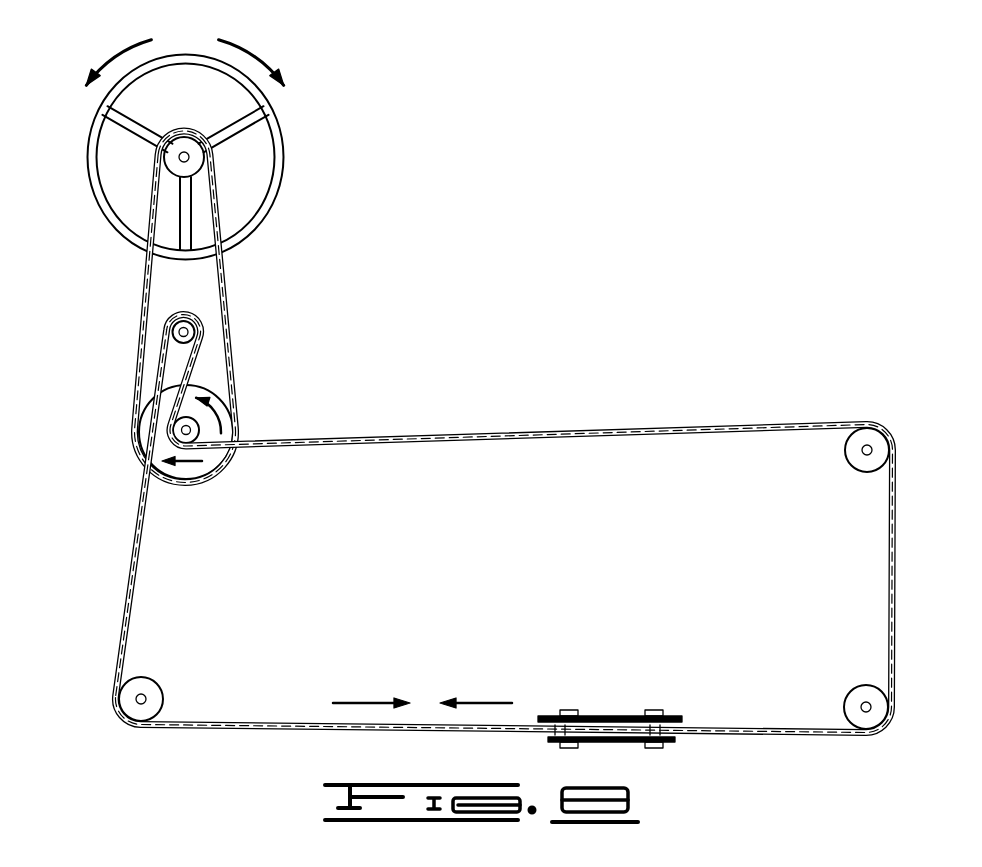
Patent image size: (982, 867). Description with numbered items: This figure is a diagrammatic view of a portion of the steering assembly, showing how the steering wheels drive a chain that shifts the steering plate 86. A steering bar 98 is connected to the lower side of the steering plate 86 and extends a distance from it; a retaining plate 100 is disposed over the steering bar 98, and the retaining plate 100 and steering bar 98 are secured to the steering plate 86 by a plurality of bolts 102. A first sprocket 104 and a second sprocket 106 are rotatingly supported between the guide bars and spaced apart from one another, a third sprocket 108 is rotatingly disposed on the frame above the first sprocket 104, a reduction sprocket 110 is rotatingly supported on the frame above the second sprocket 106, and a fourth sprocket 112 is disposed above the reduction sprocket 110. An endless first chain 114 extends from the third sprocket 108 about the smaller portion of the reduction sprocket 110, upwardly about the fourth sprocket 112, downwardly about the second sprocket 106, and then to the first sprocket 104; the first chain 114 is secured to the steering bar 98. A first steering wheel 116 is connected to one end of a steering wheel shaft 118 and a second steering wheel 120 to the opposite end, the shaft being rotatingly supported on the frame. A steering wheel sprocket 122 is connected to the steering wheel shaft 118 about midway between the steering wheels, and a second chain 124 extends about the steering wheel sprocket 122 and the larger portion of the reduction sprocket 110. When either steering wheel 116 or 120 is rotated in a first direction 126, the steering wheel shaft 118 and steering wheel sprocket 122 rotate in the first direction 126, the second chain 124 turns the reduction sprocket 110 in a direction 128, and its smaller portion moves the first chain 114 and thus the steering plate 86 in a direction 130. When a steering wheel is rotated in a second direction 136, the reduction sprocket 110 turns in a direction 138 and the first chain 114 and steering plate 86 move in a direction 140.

The steering plate 86 is at (672, 718).
The steering bar 98 is at (660, 748).
The retaining plate 100 is at (674, 741).
The bolts 102 is at (569, 710).
The first sprocket 104 is at (858, 694).
The second sprocket 106 is at (137, 683).
The third sprocket 108 is at (862, 462).
The reduction sprocket 110 is at (203, 388).
The fourth sprocket 112 is at (183, 340).
The first chain 114 is at (247, 721).
The first steering wheel 116 is at (240, 157).
The steering wheel shaft 118 is at (192, 160).
The second steering wheel 120 is at (187, 157).
The steering wheel sprocket 122 is at (175, 167).
The second chain 124 is at (229, 303).
The first direction 126 is at (243, 52).
The direction 128 is at (187, 468).
The direction 130 is at (368, 704).
The second direction 136 is at (125, 52).
The direction 138 is at (214, 417).
The direction 140 is at (488, 704).